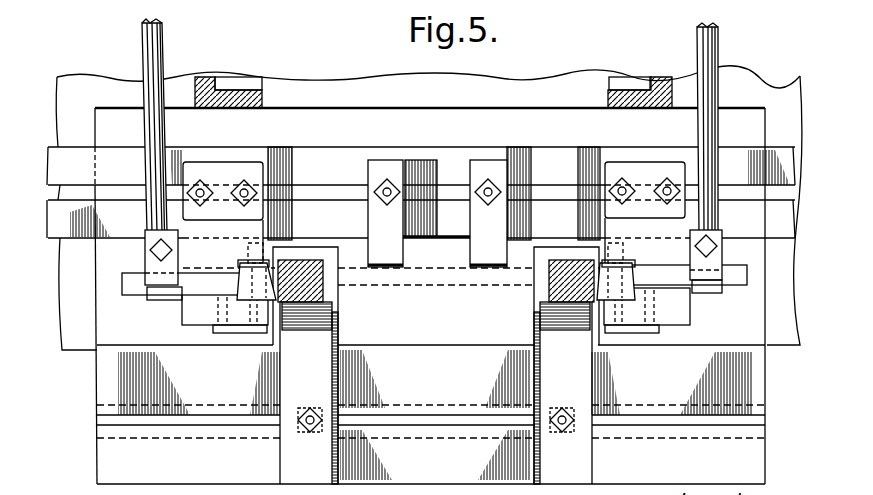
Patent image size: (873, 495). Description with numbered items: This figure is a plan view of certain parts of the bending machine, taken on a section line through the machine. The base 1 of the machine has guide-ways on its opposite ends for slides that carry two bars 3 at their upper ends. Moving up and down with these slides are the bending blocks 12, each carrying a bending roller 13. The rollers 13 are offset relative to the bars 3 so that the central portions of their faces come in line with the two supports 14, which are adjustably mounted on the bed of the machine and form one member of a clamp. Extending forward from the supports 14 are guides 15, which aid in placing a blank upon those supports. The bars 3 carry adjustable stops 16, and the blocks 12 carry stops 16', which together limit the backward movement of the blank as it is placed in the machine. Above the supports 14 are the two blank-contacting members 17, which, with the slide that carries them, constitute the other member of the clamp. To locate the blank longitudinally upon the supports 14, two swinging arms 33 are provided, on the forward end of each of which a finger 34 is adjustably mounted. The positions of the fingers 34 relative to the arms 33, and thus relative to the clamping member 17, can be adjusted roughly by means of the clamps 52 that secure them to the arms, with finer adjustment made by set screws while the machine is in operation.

The base 1 is at (341, 95).
The bar 3 is at (437, 215).
The bending block 12 is at (188, 308).
The bending roller 13 is at (287, 260).
The support 14 is at (315, 307).
The guide 15 is at (540, 450).
The adjustable stop 16 is at (437, 213).
The stop 16' is at (434, 270).
The blank-contacting member 17 is at (322, 292).
The swinging arm 33 is at (160, 70).
The finger 34 is at (128, 280).
The clamp 52 is at (147, 243).